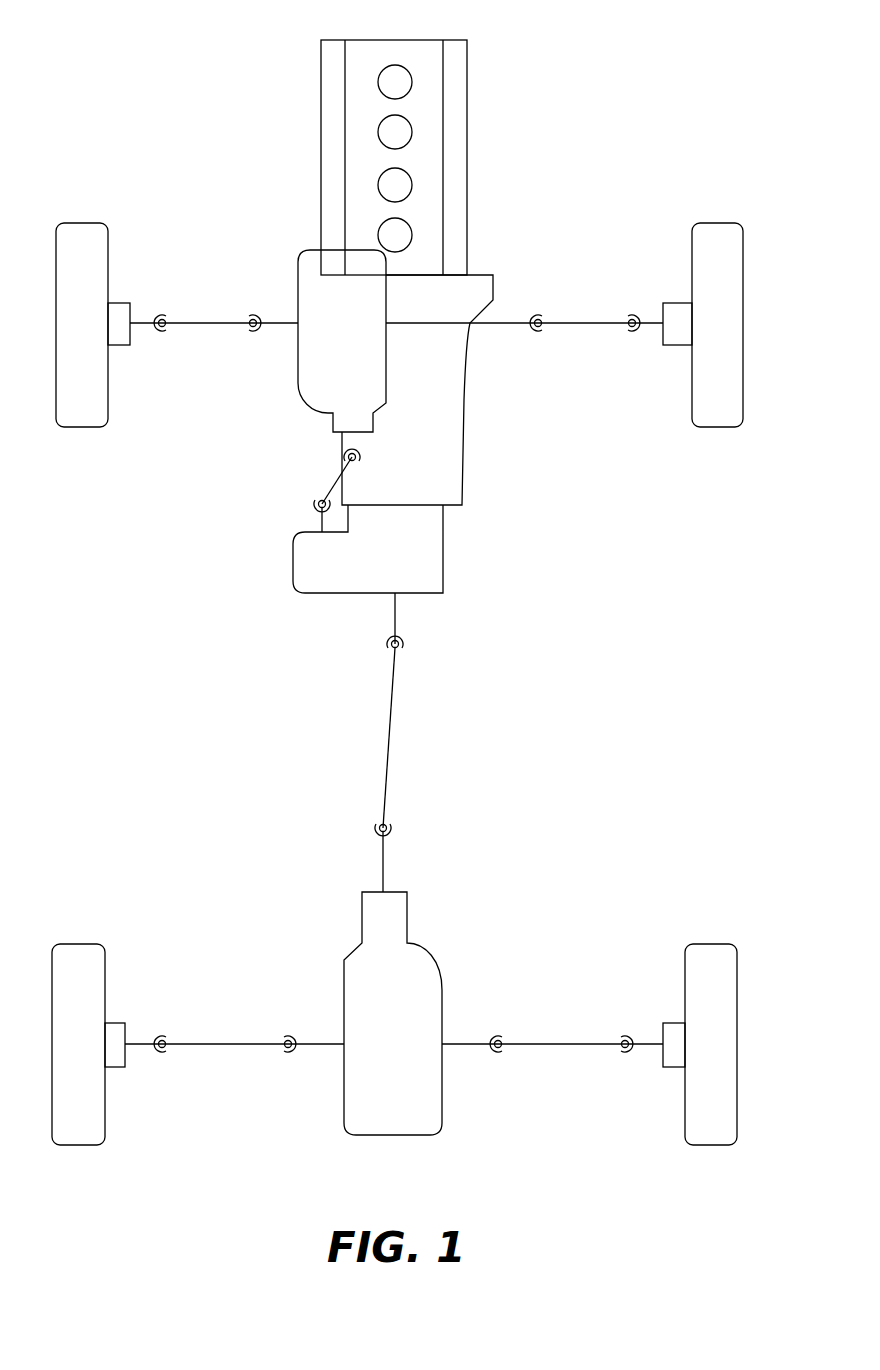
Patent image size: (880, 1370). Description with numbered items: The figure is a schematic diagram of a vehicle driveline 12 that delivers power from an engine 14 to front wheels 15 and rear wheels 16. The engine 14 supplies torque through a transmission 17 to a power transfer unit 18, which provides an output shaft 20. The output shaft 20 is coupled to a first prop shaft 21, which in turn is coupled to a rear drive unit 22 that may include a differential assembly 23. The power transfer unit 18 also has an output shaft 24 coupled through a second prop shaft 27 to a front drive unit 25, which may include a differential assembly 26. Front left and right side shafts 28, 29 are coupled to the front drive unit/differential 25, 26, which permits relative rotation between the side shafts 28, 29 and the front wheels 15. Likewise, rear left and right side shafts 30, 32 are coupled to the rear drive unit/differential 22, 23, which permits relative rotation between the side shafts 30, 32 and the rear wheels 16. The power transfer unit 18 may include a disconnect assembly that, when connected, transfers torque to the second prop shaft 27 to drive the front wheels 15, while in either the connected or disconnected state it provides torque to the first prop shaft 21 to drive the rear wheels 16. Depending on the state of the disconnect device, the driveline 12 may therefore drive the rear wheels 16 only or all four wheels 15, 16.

The vehicle driveline 12 is at (397, 622).
The engine 14 is at (467, 96).
The front wheels 15 is at (83, 223).
The rear wheels 16 is at (82, 944).
The transmission 17 is at (470, 398).
The power transfer unit 18 is at (443, 556).
The output shaft 20 is at (395, 612).
The first prop shaft 21 is at (395, 693).
The rear drive unit 22 is at (418, 1048).
The differential assembly 23 is at (388, 1135).
The output shaft 24 is at (322, 525).
The front drive unit 25 is at (284, 341).
The differential assembly 26 is at (298, 370).
The second prop shaft 27 is at (338, 488).
The front left side shaft 28 is at (213, 323).
The front right side shaft 29 is at (585, 323).
The rear left side shaft 30 is at (228, 1044).
The rear right side shaft 32 is at (570, 1044).